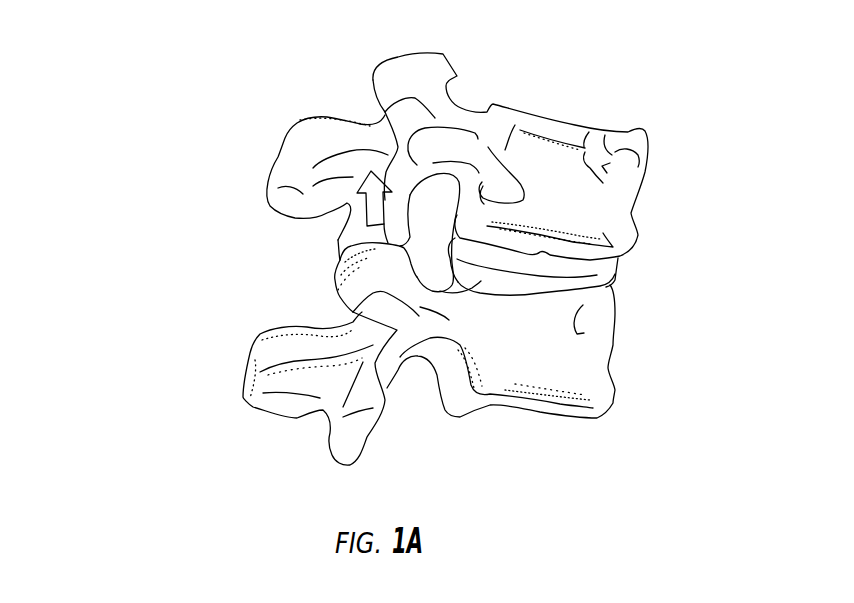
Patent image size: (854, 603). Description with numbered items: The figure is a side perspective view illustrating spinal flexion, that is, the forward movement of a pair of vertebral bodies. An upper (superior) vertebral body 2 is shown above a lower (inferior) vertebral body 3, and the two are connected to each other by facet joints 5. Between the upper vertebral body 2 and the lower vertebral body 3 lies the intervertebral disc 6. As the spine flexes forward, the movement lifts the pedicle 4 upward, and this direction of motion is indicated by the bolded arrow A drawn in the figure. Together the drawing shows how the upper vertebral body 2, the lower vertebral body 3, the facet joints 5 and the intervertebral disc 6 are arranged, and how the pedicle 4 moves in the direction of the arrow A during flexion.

The upper (superior) vertebral body 2 is at (610, 188).
The lower (inferior) vertebral body 3 is at (608, 368).
The pedicle 4 is at (269, 173).
The facet joints 5 is at (337, 263).
The intervertebral disc 6 is at (620, 272).
The bolded arrow A is at (345, 208).